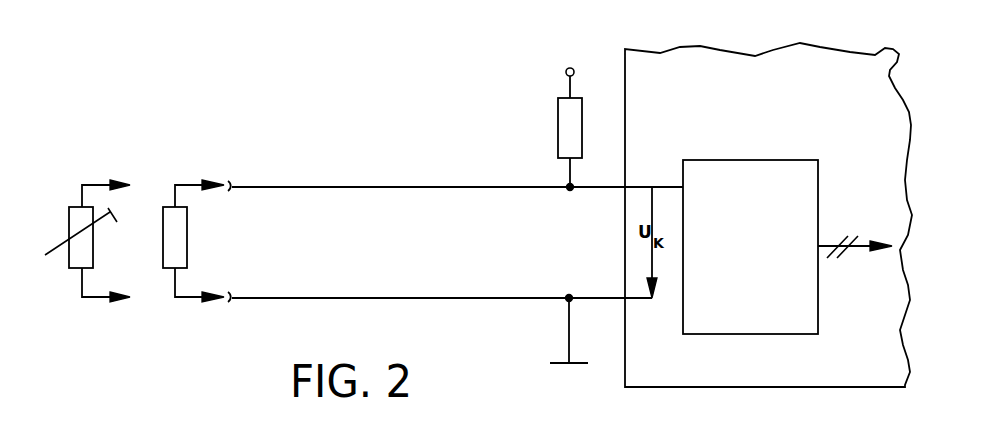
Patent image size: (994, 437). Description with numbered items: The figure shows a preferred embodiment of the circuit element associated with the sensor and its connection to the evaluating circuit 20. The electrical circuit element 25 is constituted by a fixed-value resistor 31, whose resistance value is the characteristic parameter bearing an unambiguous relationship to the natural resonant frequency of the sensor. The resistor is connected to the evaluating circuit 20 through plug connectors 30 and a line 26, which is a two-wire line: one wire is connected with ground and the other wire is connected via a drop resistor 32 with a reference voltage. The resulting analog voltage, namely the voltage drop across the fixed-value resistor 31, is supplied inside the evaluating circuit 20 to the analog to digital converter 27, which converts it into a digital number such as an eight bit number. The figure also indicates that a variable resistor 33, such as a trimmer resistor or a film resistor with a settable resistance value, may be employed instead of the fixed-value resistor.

The evaluating circuit 20 is at (705, 57).
The electrical circuit element 25 is at (199, 218).
The line 26 is at (352, 173).
The analog to digital converter 27 is at (722, 173).
The plug connectors 30 is at (238, 168).
The fixed-value resistor 31 is at (182, 237).
The drop resistor 32 is at (570, 124).
The variable resistor 33 is at (76, 218).